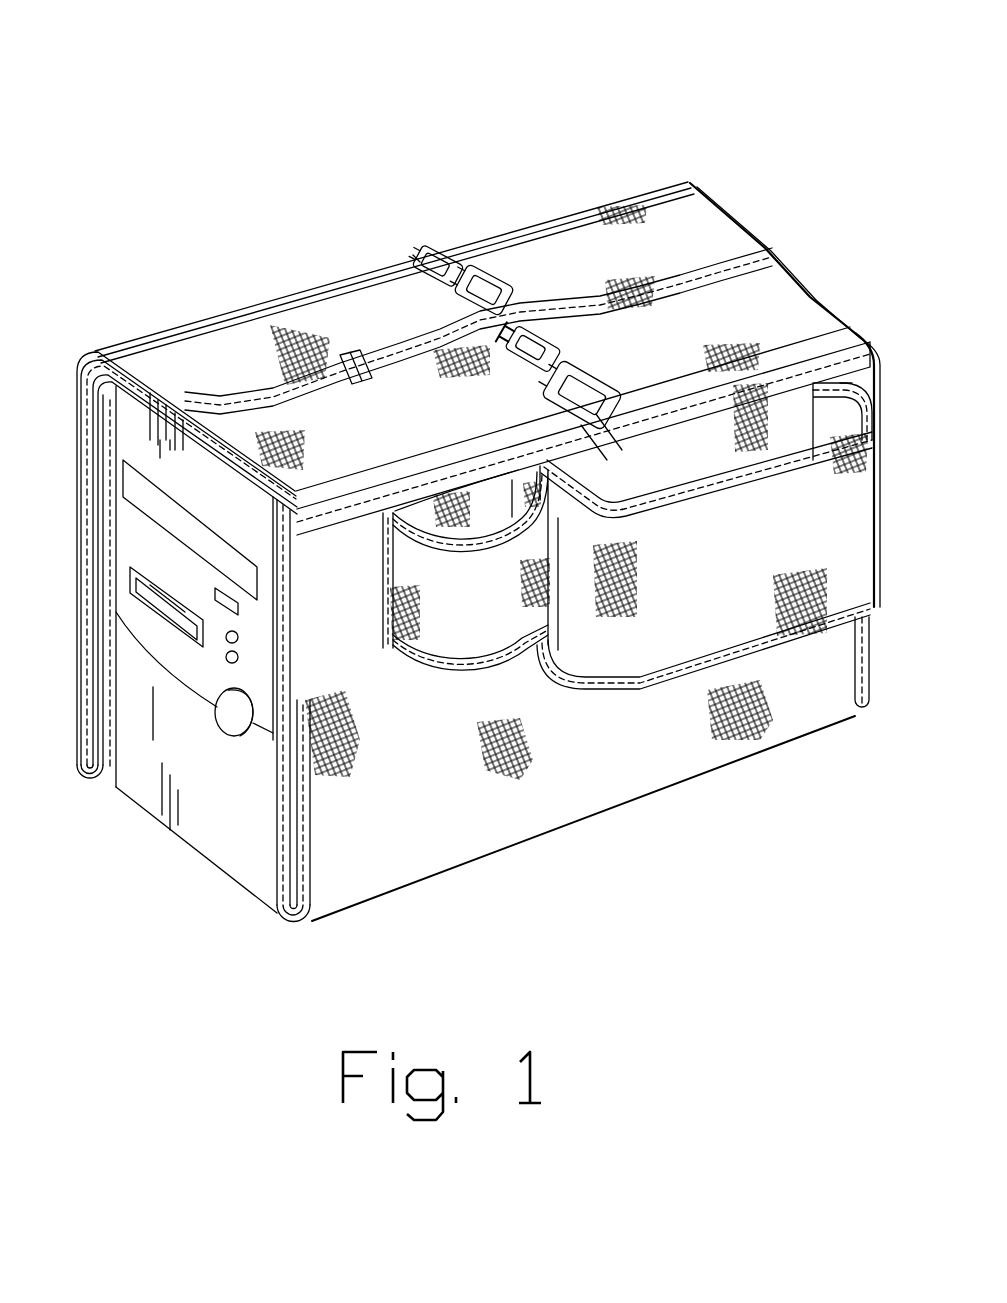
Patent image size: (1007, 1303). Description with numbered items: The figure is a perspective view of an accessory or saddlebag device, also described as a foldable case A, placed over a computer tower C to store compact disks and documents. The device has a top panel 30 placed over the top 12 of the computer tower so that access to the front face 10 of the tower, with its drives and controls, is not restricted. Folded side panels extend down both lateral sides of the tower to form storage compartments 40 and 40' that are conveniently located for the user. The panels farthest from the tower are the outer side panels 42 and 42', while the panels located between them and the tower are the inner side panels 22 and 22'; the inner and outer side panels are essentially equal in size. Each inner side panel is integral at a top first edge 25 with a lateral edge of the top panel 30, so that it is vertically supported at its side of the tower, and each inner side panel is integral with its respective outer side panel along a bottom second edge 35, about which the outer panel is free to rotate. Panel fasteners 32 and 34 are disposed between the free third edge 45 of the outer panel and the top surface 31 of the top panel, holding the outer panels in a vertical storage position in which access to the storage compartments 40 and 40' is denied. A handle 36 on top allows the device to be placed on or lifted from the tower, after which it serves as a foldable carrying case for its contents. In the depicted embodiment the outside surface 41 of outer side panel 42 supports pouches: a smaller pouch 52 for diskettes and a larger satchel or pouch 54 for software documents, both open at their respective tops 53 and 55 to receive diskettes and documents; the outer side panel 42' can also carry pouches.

The saddlebag device A is at (272, 132).
The computer tower C is at (180, 855).
The front face 10 is at (252, 792).
The top 12 is at (133, 378).
The inner side panel 22 is at (261, 738).
The inner side panel 22' is at (71, 582).
The top first edge 25 is at (270, 320).
The top panel 30 is at (700, 223).
The top surface 31 is at (410, 444).
The panel fastener 32 is at (590, 357).
The panel fastener 34 is at (425, 298).
The bottom second edge 35 is at (440, 873).
The handle 36 is at (537, 300).
The storage compartment 40 is at (739, 655).
The storage compartment 40' is at (398, 204).
The outside surface 41 is at (440, 826).
The outer side panel 42 is at (756, 621).
The outer side panel 42' is at (299, 455).
The free third edge 45 is at (653, 184).
The pouch 52 is at (460, 637).
The top 53 is at (503, 517).
The pouch 54 is at (650, 650).
The top 55 is at (690, 471).